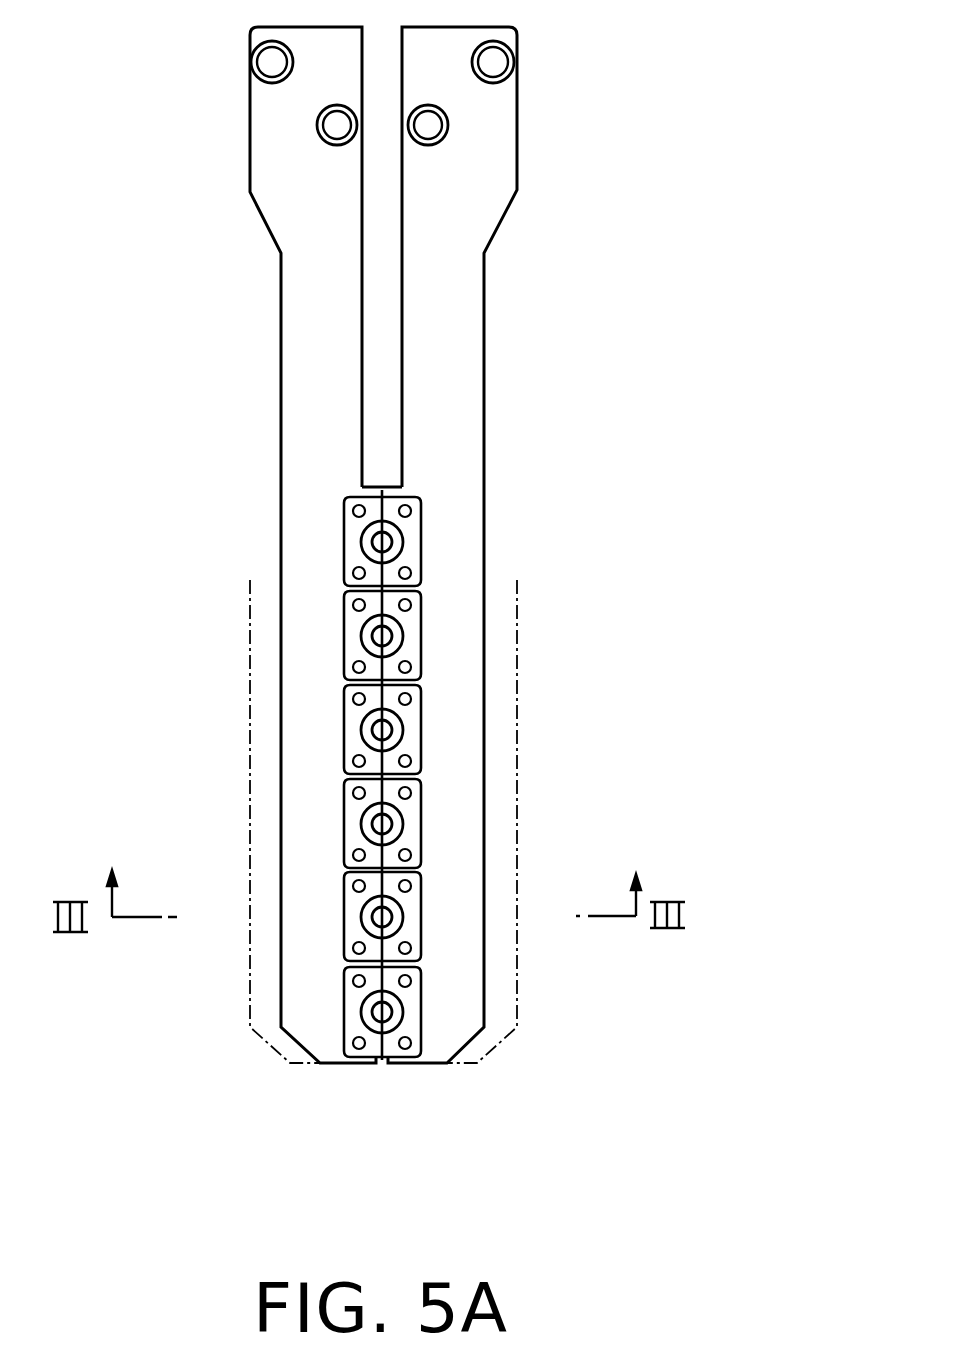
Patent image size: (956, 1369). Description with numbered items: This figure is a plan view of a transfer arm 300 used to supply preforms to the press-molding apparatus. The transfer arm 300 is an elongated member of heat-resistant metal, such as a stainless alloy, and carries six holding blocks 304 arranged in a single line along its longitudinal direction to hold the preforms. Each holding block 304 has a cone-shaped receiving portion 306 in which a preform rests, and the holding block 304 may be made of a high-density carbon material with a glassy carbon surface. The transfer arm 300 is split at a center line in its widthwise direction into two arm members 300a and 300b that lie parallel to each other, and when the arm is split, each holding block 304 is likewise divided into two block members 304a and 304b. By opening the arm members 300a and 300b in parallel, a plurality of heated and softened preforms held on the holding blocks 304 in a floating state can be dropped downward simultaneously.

The transfer arm 300 is at (286, 545).
The arm member 300a is at (337, 379).
The arm member 300b is at (440, 330).
The holding block 304 is at (323, 851).
The block member 304a is at (368, 1057).
The block member 304b is at (397, 1057).
The cone-shaped receiving portion 306 is at (400, 543).